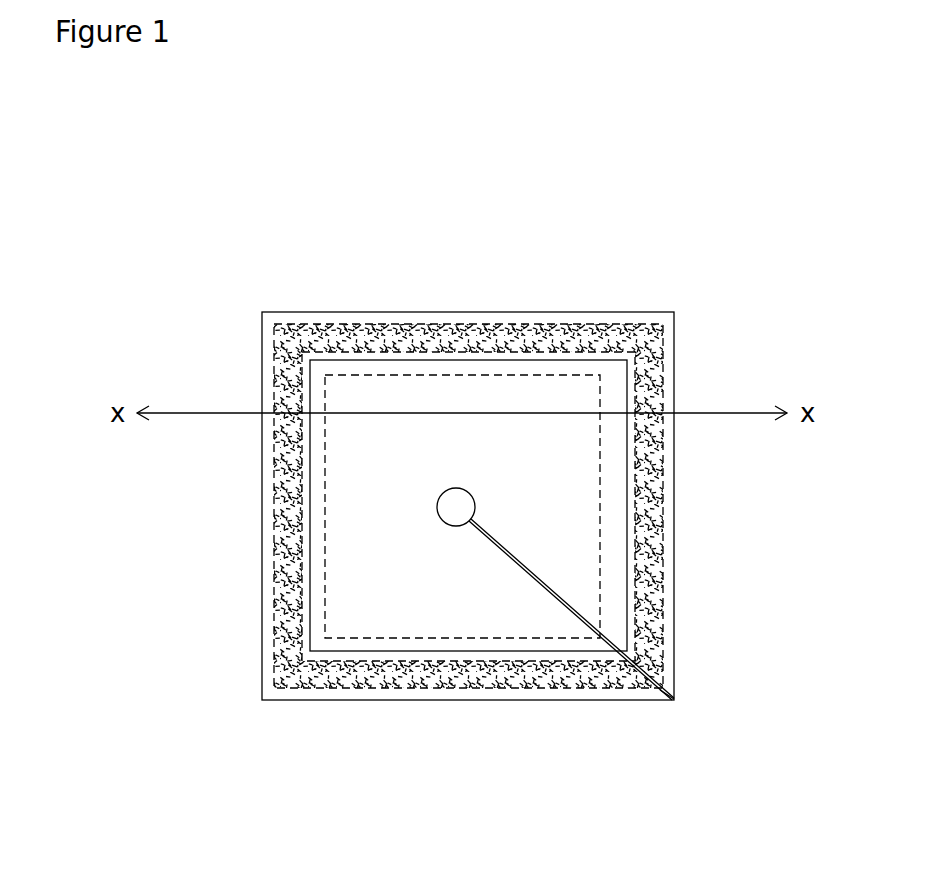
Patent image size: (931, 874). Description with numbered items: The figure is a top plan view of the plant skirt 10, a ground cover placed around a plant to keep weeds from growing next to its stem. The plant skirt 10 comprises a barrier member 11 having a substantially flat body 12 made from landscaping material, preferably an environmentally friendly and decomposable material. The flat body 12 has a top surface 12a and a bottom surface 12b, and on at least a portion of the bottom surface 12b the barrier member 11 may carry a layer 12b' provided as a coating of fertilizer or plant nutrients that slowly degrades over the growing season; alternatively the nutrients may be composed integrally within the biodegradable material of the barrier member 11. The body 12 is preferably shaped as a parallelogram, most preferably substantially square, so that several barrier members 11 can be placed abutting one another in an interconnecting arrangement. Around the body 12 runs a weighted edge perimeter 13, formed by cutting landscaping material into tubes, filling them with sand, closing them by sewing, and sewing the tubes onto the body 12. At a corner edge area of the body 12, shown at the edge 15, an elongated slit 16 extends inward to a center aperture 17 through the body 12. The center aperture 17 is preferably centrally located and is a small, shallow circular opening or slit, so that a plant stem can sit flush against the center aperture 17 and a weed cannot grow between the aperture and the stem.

The plant skirt 10 is at (237, 235).
The barrier member 11 is at (260, 350).
The flat body 12 is at (348, 524).
The top surface 12a is at (573, 387).
The bottom surface 12b is at (462, 408).
The layer 12b' is at (462, 414).
The weighted edge perimeter 13 is at (273, 498).
The edge 15 is at (675, 686).
The elongated slit 16 is at (588, 625).
The center aperture 17 is at (452, 525).